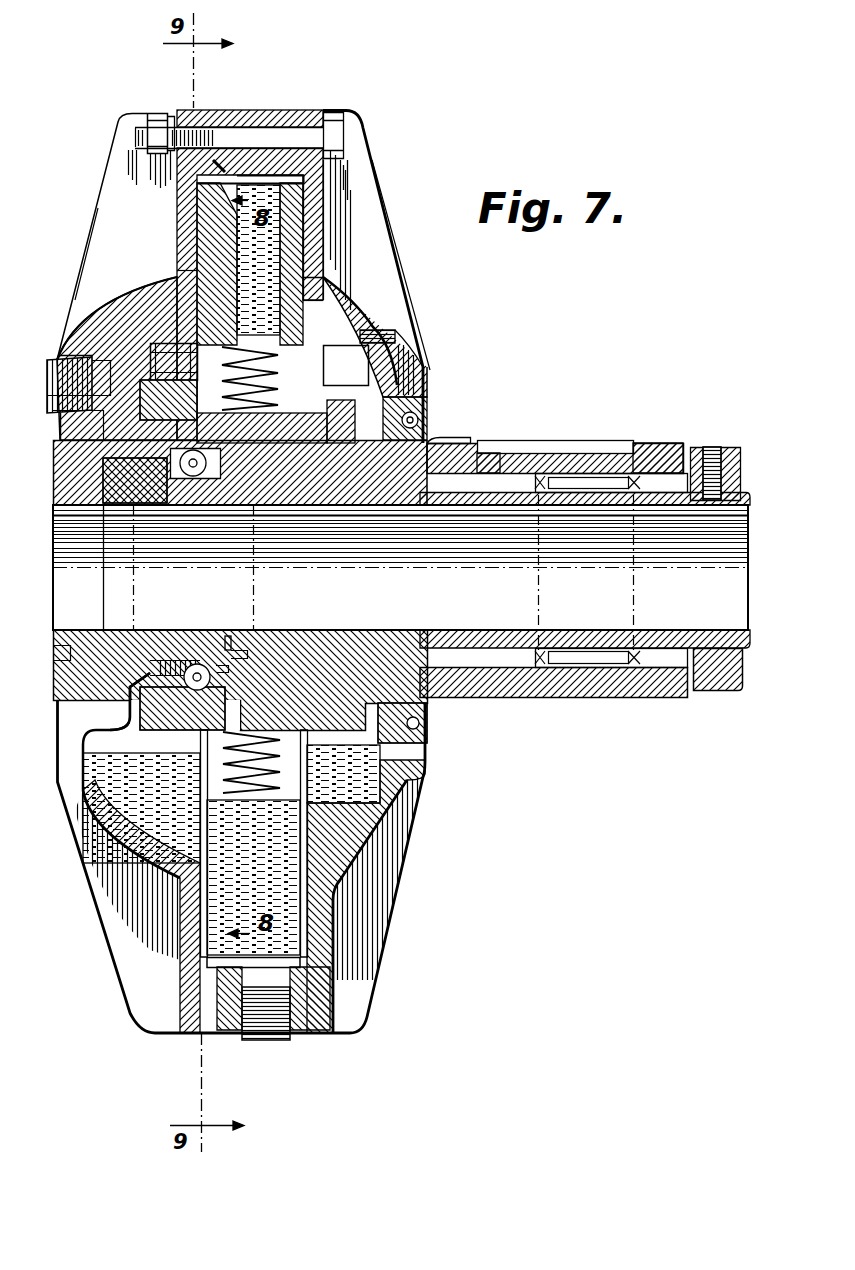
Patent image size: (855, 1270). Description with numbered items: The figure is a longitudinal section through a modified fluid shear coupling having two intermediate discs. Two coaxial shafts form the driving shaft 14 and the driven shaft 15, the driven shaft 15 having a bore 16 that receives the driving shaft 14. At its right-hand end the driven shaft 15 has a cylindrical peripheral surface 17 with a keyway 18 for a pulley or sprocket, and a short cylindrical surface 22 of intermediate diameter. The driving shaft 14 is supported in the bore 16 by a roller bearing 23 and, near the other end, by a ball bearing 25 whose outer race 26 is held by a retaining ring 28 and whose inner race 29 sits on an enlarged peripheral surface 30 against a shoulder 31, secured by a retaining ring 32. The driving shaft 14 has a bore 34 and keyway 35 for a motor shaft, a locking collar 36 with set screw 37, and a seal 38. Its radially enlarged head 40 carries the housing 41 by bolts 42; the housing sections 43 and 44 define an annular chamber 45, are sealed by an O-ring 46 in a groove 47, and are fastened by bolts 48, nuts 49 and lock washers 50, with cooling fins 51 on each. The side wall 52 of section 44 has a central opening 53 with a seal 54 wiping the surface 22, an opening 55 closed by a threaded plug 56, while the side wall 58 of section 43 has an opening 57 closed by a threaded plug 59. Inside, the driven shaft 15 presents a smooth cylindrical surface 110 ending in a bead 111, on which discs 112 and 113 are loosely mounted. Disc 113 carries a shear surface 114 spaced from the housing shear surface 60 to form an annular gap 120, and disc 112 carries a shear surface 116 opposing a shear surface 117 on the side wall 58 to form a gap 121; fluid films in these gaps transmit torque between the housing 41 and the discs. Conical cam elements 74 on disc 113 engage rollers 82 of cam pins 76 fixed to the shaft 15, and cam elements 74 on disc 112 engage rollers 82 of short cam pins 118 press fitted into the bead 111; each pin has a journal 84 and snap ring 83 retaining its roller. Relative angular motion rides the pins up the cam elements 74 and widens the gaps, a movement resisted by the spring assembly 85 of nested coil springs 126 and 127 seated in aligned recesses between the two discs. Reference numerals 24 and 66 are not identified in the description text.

The driving shaft 14 is at (748, 649).
The driven shaft 15 is at (652, 444).
The bore 16 is at (410, 505).
The cylindrical peripheral surface 17 is at (536, 698).
The keyway 18 is at (523, 440).
The cylindrical surface 22 is at (441, 443).
The roller bearing 23 is at (578, 474).
The shoulder 24 is at (482, 469).
The ball bearing 25 is at (218, 671).
The outer race 26 is at (232, 715).
The retaining ring 28 is at (140, 704).
The inner race 29 is at (190, 660).
The peripheral surface 30 is at (246, 654).
The shoulder 31 is at (160, 480).
The retaining ring 32 is at (229, 636).
The bore 34 is at (350, 630).
The keyway 35 is at (735, 516).
The locking collar 36 is at (720, 686).
The set screw 37 is at (714, 450).
The seal 38 is at (670, 669).
The head 40 is at (110, 484).
The housing 41 is at (110, 228).
The bolts 42 is at (60, 656).
The housing section 43 is at (200, 116).
The housing section 44 is at (288, 110).
The annular chamber 45 is at (83, 733).
The O-ring 46 is at (212, 165).
The groove 47 is at (214, 158).
The bolts 48 is at (336, 132).
The nuts 49 is at (156, 112).
The lock washers 50 is at (170, 114).
The cooling fins 51 is at (84, 258).
The side wall 52 is at (400, 331).
The central opening 53 is at (415, 399).
The seal 54 is at (420, 419).
The opening 55 is at (298, 1001).
The threaded plug 56 is at (262, 1043).
The opening 57 is at (100, 411).
The side wall 58 is at (80, 330).
The threaded plug 59 is at (47, 373).
The shear surface 60 is at (325, 250).
The oil reservoir 66 is at (84, 763).
The cam elements 74 is at (130, 305).
The cam pins 76 is at (308, 431).
The rollers 82 is at (150, 356).
The snap rings 83 is at (408, 359).
The journals 84 is at (396, 341).
The spring assembly 85 is at (262, 345).
The cylindrical surface 110 is at (360, 444).
The bead 111 is at (140, 405).
The disc 112 is at (185, 283).
The disc 113 is at (330, 290).
The shear surface 114 is at (300, 208).
The shear surface 116 is at (197, 226).
The shear surface 117 is at (197, 244).
The cam pins 118 is at (120, 458).
The annular gap 120 is at (310, 218).
The gap 121 is at (188, 265).
The coil spring 126 is at (277, 719).
The coil spring 127 is at (293, 570).